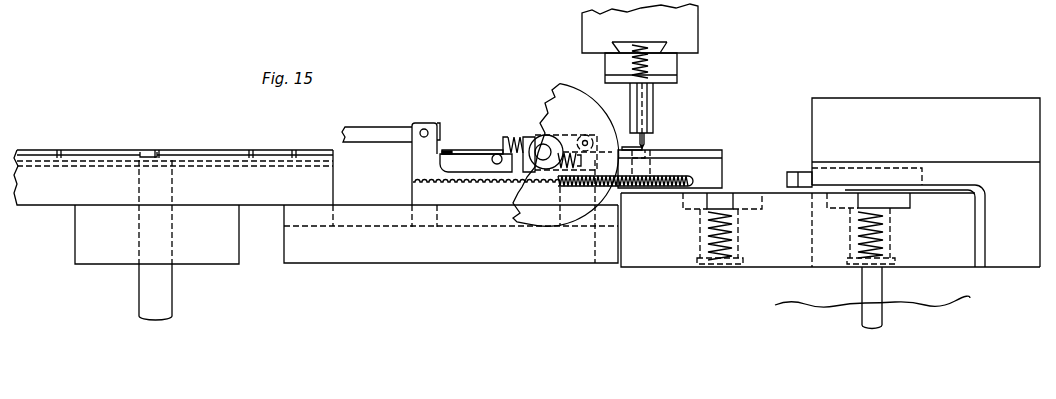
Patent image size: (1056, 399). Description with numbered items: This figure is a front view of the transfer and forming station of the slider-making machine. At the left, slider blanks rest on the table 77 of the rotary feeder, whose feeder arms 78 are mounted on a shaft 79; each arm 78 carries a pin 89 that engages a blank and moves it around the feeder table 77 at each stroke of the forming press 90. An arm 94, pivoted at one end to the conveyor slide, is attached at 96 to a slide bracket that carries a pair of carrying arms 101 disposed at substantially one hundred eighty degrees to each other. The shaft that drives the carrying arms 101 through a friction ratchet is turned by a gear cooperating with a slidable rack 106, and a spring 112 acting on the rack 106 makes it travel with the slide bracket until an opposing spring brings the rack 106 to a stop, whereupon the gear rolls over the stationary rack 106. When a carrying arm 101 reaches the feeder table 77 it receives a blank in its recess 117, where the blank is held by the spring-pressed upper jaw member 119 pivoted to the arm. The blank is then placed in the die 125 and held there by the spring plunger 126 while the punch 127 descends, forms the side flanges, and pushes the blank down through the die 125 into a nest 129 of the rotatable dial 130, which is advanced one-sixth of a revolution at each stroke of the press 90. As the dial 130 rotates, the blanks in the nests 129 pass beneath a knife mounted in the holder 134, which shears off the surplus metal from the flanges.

The table 77 is at (47, 197).
The feeder arms 78 is at (78, 154).
The shaft 79 is at (167, 303).
The pin 89 is at (60, 155).
The forming press 90 is at (685, 13).
The arm 94 is at (367, 127).
The attachment point 96 is at (426, 130).
The carrying arms 101 is at (465, 157).
The rack 106 is at (462, 184).
The spring 112 is at (577, 187).
The recess 117 is at (443, 157).
The upper jaw member 119 is at (443, 150).
The die 125 is at (675, 150).
The spring plunger 126 is at (642, 136).
The punch 127 is at (653, 118).
The nest 129 is at (903, 197).
The rotatable dial 130 is at (658, 267).
The holder 134 is at (897, 107).